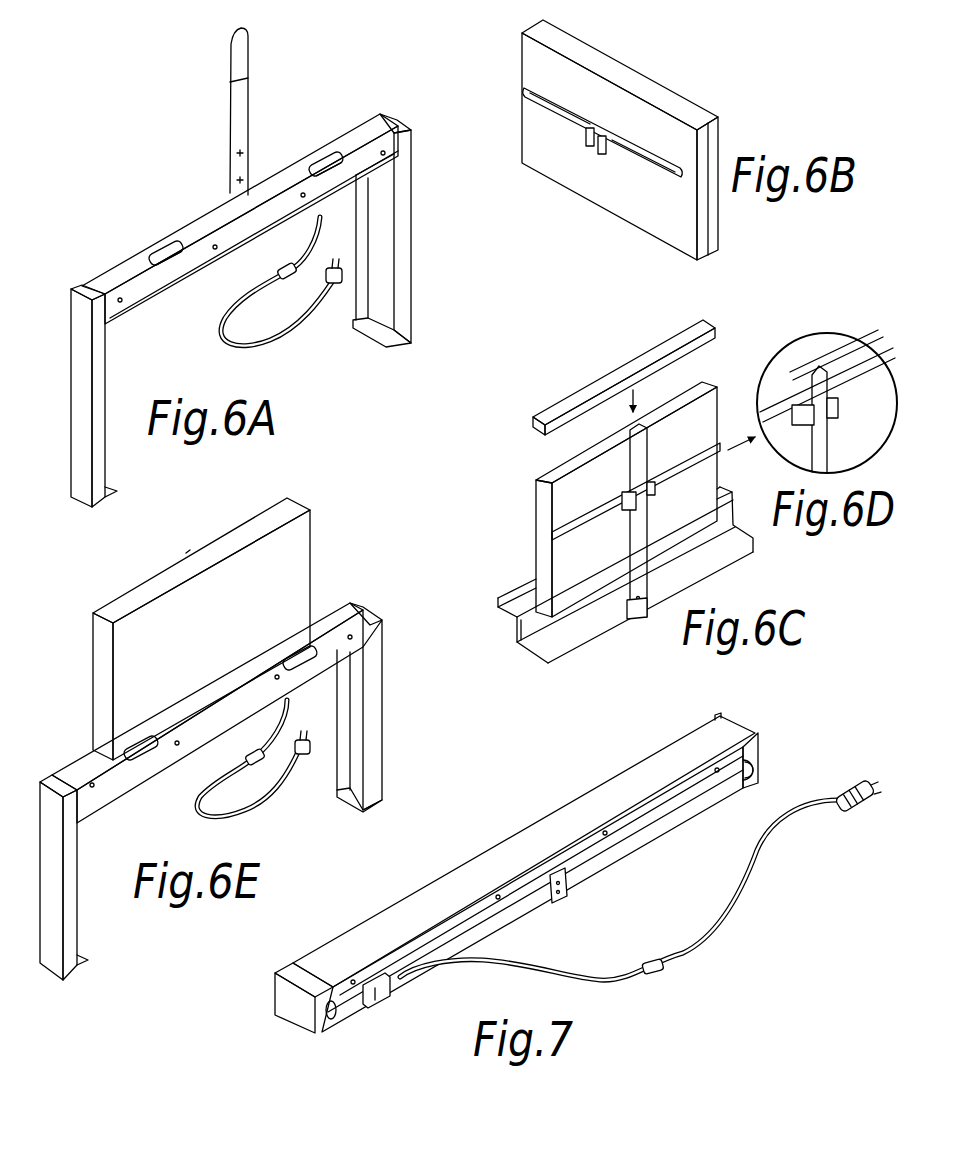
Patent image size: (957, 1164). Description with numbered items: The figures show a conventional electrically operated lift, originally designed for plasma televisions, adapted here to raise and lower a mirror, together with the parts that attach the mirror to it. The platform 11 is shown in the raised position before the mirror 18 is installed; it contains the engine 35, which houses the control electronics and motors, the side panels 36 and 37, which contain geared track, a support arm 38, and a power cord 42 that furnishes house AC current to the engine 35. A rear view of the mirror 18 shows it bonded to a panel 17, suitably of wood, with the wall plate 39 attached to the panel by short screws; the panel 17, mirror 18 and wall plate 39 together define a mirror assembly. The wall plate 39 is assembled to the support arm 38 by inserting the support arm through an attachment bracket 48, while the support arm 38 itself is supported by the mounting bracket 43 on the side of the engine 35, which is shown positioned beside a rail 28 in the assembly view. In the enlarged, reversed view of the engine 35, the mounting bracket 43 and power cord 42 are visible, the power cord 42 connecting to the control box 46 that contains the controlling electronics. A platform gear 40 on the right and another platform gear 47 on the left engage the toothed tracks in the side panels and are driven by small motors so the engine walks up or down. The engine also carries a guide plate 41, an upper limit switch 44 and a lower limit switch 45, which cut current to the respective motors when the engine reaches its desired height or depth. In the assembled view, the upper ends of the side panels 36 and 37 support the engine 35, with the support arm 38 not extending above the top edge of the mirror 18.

In FIG. 6A, the platform 11 is at (205, 223).
In FIG. 6B, the panel 17 is at (590, 153).
In FIG. 6C, the panel 17 is at (626, 484).
In FIG. 6E, the panel 17 is at (183, 629).
In FIG. 6B, the mirror 18 is at (653, 83).
In FIG. 6C, the mirror 18 is at (540, 513).
In FIG. 6E, the mirror 18 is at (117, 690).
In FIG. 6C, the top rail 28 is at (568, 397).
In FIG. 6A, the engine 35 is at (249, 310).
In FIG. 6C, the engine 35 is at (720, 563).
In FIG. 6E, the engine 35 is at (233, 791).
In FIG. 7, the engine 35 is at (540, 817).
In FIG. 6A, the side panel 36 is at (70, 387).
In FIG. 6E, the side panel 36 is at (70, 865).
In FIG. 6A, the side panel 37 is at (407, 223).
In FIG. 6E, the side panel 37 is at (380, 747).
In FIG. 6A, the support arm 38 is at (248, 118).
In FIG. 6C, the support arm 38 is at (642, 453).
In FIG. 6D, the support arm 38 is at (827, 457).
In FIG. 6E, the support arm 38 is at (193, 550).
In FIG. 6B, the wall plate 39 is at (520, 88).
In FIG. 6C, the wall plate 39 is at (603, 486).
In FIG. 6D, the wall plate 39 is at (780, 400).
In FIG. 7, the platform gear 40 is at (755, 785).
In FIG. 7, the guide plate 41 is at (758, 742).
In FIG. 6A, the power cord 42 is at (260, 340).
In FIG. 6E, the power cord 42 is at (260, 793).
In FIG. 7, the power cord 42 is at (742, 892).
In FIG. 6C, the mounting bracket 43 is at (625, 620).
In FIG. 7, the mounting bracket 43 is at (560, 900).
In FIG. 7, the upper limit switch 44 is at (293, 980).
In FIG. 7, the lower limit switch 45 is at (291, 996).
In FIG. 7, the control box 46 is at (383, 1000).
In FIG. 7, the platform gear 47 is at (340, 1017).
In FIG. 6C, the attachment bracket 48 is at (623, 513).
In FIG. 6D, the attachment bracket 48 is at (790, 443).